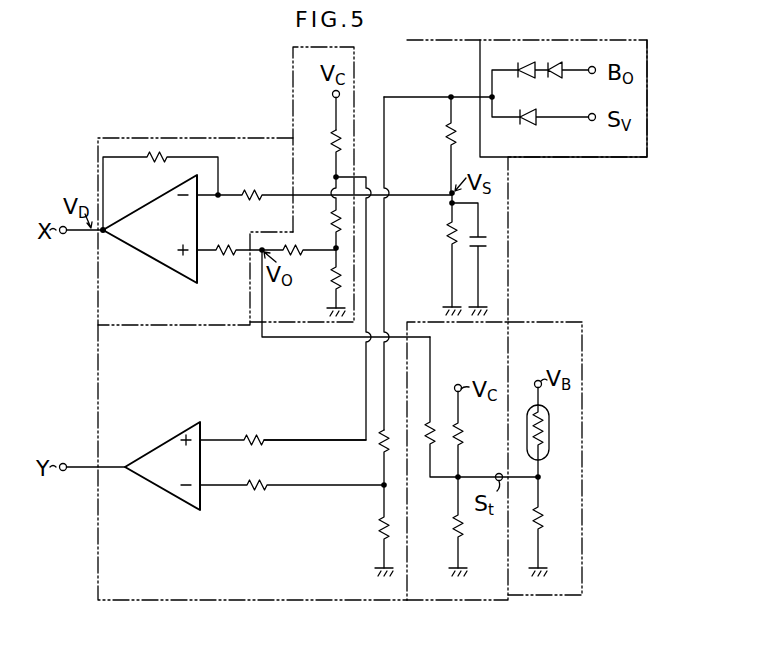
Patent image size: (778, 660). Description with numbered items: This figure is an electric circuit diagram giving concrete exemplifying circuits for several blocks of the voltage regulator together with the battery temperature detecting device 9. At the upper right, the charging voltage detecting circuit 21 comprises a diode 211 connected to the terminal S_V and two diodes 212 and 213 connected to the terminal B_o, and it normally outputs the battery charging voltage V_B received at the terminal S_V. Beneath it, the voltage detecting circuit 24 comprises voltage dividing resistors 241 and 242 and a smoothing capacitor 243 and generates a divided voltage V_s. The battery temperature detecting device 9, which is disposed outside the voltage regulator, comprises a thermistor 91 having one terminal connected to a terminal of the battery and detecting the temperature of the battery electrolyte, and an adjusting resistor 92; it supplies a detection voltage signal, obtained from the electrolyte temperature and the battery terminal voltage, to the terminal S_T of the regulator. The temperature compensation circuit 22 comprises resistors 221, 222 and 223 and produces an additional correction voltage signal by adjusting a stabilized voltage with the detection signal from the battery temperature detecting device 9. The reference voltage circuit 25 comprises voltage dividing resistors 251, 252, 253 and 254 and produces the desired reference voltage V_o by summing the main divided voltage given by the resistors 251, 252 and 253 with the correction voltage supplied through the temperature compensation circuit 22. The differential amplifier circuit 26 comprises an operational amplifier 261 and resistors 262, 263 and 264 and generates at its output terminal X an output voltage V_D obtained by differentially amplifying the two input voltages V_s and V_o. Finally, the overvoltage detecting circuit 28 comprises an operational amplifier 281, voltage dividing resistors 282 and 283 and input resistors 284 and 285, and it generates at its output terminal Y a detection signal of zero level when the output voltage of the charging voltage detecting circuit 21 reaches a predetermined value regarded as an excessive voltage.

The battery temperature detecting device 9 is at (584, 378).
The thermistor 91 is at (549, 441).
The adjusting resistor 92 is at (545, 518).
The charging voltage detecting circuit 21 is at (638, 39).
The diode 211 is at (529, 126).
The diode 212 is at (552, 62).
The diode 213 is at (527, 63).
The temperature compensation circuit 22 is at (489, 599).
The resistor 221 is at (462, 430).
The resistor 222 is at (465, 521).
The resistor 223 is at (433, 420).
The voltage detecting circuit 24 is at (408, 80).
The voltage dividing resistor 241 is at (448, 137).
The voltage dividing resistor 242 is at (447, 230).
The smoothing capacitor 243 is at (486, 241).
The reference voltage circuit 25 is at (292, 92).
The voltage dividing resistor 251 is at (331, 140).
The voltage dividing resistor 252 is at (331, 232).
The voltage dividing resistor 253 is at (331, 292).
The voltage dividing resistor 254 is at (296, 258).
The differential amplifier circuit 26 is at (146, 137).
The operational amplifier 261 is at (138, 256).
The resistor 262 is at (257, 191).
The resistor 263 is at (166, 154).
The resistor 264 is at (230, 254).
The overvoltage detecting circuit 28 is at (314, 600).
The operational amplifier 281 is at (160, 490).
The voltage dividing resistor 282 is at (382, 441).
The voltage dividing resistor 283 is at (383, 525).
The input resistor 284 is at (262, 436).
The input resistor 285 is at (265, 490).